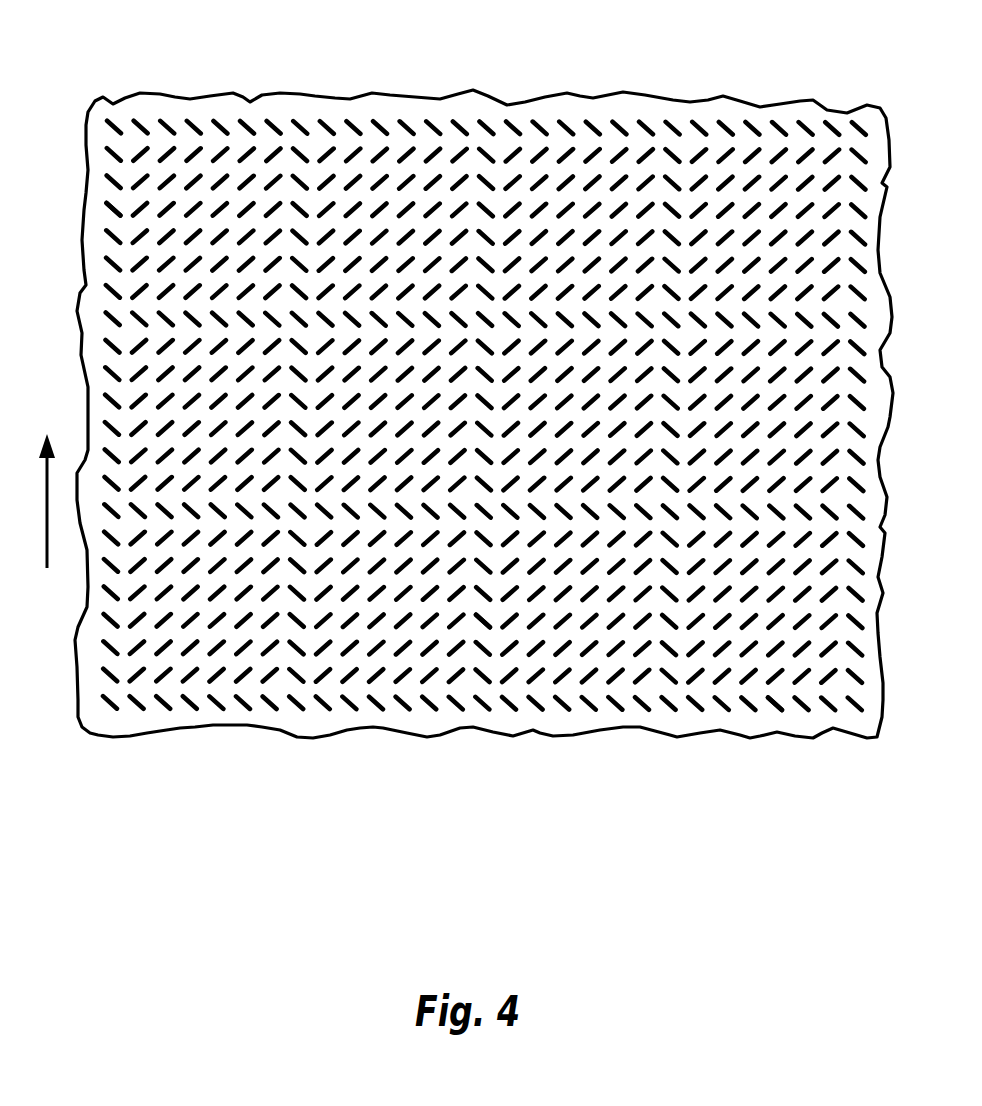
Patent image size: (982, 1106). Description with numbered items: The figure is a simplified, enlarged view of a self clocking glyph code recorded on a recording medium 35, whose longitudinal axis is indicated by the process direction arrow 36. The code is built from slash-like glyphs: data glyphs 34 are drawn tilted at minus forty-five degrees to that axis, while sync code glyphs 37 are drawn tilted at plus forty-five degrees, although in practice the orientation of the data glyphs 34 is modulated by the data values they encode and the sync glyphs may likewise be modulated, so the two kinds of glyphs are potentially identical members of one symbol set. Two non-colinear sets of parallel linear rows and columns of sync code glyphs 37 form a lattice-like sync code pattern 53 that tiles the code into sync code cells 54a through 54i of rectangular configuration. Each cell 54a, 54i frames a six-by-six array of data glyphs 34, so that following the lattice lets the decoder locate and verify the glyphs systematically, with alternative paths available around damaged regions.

The data glyphs 34 is at (217, 151).
The recording medium 35 is at (463, 100).
The process direction arrow 36 is at (45, 481).
The sync code glyphs 37 is at (486, 617).
The lattice-like sync code pattern 53 is at (595, 112).
The sync code cell 54a is at (96, 212).
The sync code cell 54i is at (763, 718).